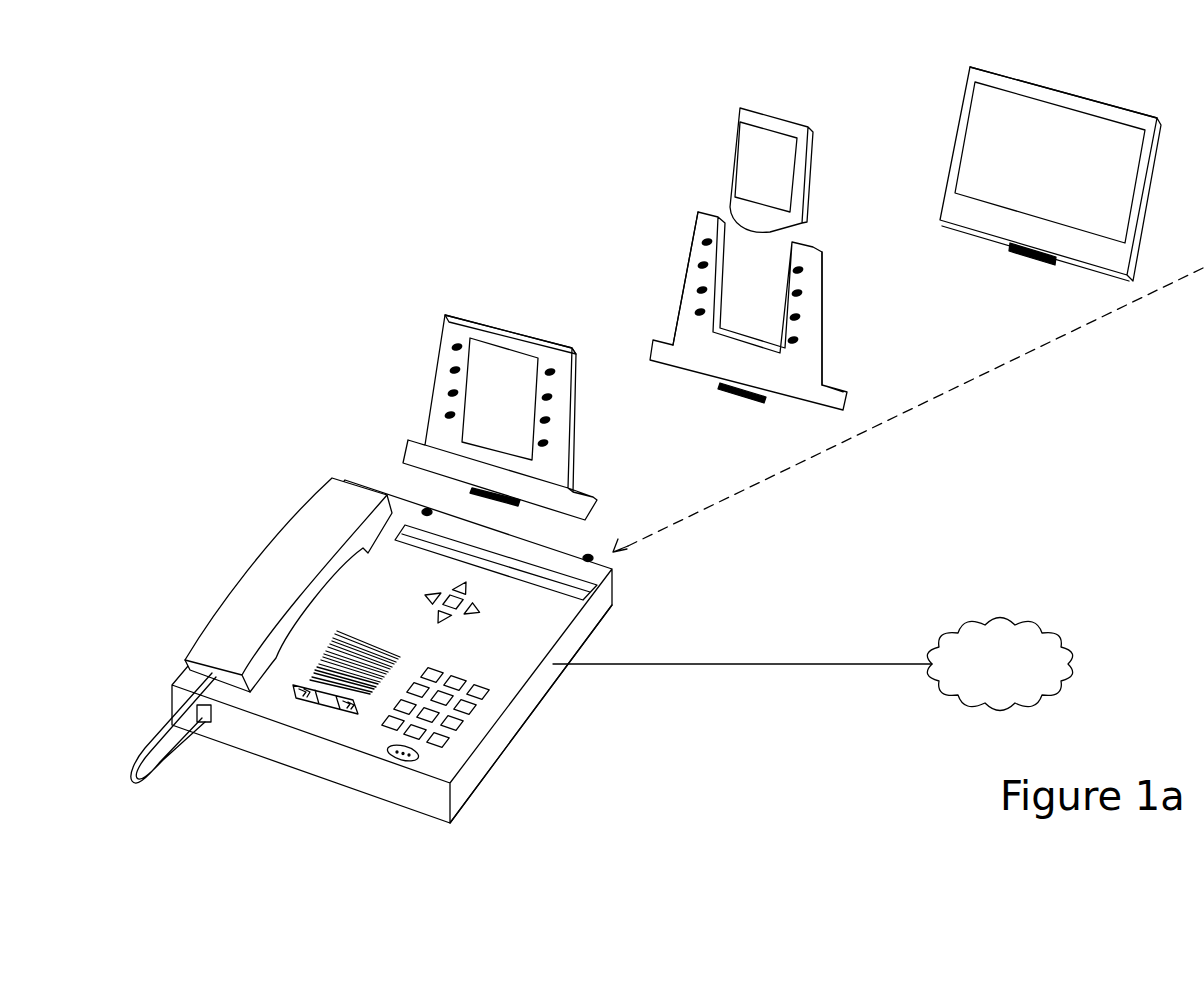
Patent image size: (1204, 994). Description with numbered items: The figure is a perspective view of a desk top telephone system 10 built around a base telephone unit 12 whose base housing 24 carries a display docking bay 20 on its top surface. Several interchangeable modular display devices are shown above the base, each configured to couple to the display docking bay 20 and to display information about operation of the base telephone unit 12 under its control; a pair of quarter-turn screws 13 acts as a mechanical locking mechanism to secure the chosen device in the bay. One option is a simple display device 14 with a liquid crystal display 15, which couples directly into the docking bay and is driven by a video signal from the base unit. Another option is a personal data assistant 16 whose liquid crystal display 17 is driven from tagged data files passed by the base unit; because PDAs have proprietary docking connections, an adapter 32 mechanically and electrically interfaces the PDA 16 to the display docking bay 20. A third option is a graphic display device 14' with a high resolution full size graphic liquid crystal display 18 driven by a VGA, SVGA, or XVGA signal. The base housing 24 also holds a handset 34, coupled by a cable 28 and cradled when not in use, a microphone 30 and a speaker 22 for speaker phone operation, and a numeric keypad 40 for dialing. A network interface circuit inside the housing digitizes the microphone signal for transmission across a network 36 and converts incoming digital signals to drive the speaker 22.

The desk top telephone system 10 is at (315, 122).
The base telephone unit 12 is at (613, 588).
The quarter-turn screws 13 is at (432, 511).
The simple display device 14 is at (510, 314).
The graphic display device 14' is at (1063, 77).
The liquid crystal display 15 is at (470, 360).
The personal data assistant 16 is at (757, 110).
The liquid crystal display 17 is at (741, 150).
The graphic liquid crystal display 18 is at (967, 113).
The display docking bay 20 is at (612, 606).
The speaker 22 is at (371, 693).
The base housing 24 is at (560, 682).
The cable 28 is at (185, 740).
The microphone 30 is at (419, 757).
The adapter 32 is at (680, 301).
The handset 34 is at (278, 528).
The network 36 is at (1013, 622).
The numeric keypad 40 is at (463, 727).